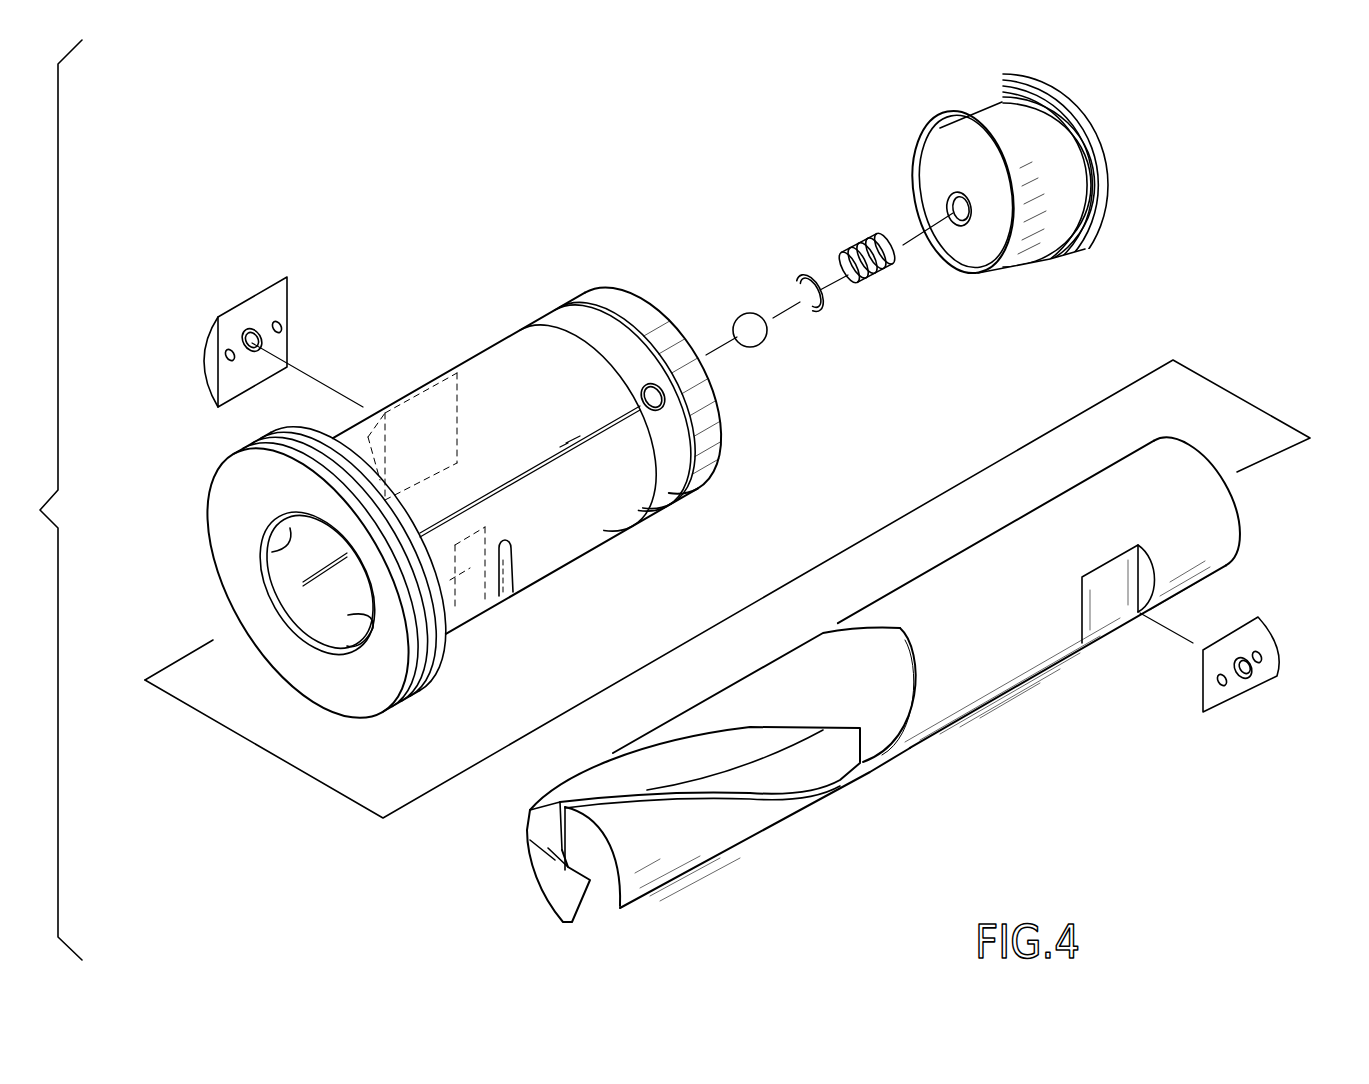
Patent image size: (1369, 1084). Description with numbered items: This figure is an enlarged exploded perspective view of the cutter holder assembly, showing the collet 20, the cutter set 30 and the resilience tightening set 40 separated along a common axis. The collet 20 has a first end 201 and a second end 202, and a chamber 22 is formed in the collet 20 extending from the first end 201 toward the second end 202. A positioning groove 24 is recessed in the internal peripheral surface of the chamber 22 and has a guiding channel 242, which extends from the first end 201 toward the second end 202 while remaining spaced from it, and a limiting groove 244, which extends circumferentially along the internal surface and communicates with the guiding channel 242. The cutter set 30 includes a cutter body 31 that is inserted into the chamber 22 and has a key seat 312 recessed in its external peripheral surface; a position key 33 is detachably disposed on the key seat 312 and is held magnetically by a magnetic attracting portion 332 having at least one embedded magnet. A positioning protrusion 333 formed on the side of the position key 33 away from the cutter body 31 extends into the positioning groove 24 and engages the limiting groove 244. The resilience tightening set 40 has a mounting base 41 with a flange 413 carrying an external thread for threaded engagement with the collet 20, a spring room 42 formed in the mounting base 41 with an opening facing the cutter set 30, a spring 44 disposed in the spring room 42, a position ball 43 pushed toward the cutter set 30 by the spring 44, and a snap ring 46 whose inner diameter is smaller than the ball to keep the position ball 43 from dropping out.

The collet 20 is at (462, 314).
The first end 201 is at (326, 572).
The second end 202 is at (625, 399).
The chamber 22 is at (317, 583).
The positioning groove 24 is at (557, 572).
The guiding channel 242 is at (357, 633).
The limiting groove 244 is at (513, 551).
The resilience tightening set 40 is at (1027, 195).
The mounting base 41 is at (972, 136).
The spring room 42 is at (950, 207).
The flange 413 is at (1057, 252).
The position ball 43 is at (758, 340).
The spring 44 is at (882, 264).
The snap ring 46 is at (820, 312).
The cutter set 30 is at (894, 671).
The cutter body 31 is at (700, 840).
The key seat 312 is at (1100, 613).
The position key 33 is at (1254, 694).
The magnetic attracting portion 332 is at (1222, 688).
The positioning protrusion 333 is at (1248, 677).